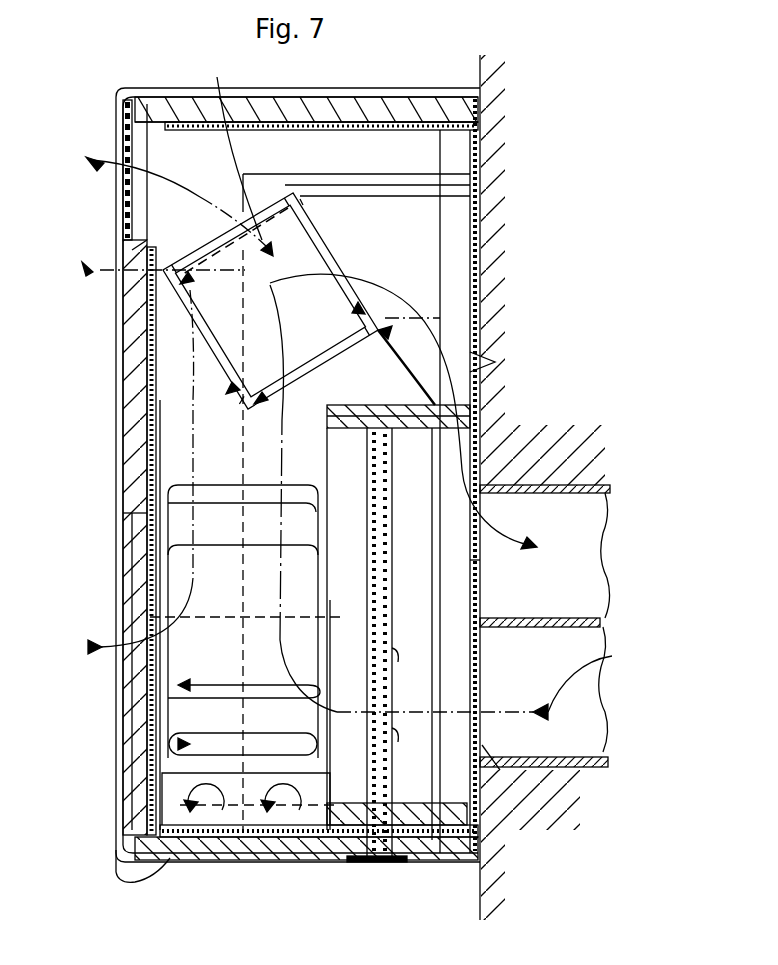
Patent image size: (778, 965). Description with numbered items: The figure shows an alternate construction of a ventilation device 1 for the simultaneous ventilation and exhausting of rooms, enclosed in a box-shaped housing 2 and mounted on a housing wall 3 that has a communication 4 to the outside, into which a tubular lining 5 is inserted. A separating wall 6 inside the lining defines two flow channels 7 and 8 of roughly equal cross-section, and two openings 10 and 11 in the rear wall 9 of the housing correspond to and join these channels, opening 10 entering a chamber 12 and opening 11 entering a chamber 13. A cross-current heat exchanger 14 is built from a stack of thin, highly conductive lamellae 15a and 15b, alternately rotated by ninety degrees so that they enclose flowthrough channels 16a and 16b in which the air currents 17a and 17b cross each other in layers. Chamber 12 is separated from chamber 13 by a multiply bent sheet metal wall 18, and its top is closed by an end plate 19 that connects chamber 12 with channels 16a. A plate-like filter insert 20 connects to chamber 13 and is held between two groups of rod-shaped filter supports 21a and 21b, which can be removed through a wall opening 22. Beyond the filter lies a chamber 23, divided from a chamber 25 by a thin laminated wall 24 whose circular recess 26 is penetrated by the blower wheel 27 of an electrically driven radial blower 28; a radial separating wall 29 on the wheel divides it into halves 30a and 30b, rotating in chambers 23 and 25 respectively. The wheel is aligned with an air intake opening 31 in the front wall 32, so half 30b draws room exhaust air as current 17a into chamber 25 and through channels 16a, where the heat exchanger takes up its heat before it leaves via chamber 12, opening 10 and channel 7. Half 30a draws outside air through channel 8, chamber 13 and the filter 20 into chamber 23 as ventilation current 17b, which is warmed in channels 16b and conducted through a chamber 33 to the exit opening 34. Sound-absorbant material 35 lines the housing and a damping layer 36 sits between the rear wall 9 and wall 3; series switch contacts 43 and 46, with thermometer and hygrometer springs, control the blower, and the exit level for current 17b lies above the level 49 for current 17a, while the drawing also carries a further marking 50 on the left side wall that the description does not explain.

The ventilation device 1 is at (104, 92).
The housing 2 is at (128, 882).
The housing wall 3 is at (542, 487).
The communication 4 is at (536, 482).
The tubular lining 5 is at (600, 757).
The separating wall 6 is at (583, 620).
The flow channel 7 is at (588, 540).
The flow channel 8 is at (578, 688).
The rear wall 9 is at (493, 795).
The opening 10 is at (478, 418).
The opening 11 is at (480, 735).
The chamber 12 is at (472, 362).
The chamber 13 is at (427, 783).
The heat exchanger 14 is at (230, 143).
The lamellae 15a is at (333, 258).
The lamellae 15b is at (176, 260).
The flowthrough channels 16a is at (262, 290).
The flowthrough channels 16b is at (357, 322).
The exhaust media current 17a is at (85, 647).
The ventilation media current 17b is at (90, 163).
The sheet metal wall 18 is at (470, 578).
The end plate 19 is at (362, 192).
The filter insert 20 is at (384, 862).
The filter supports 21a is at (384, 629).
The filter supports 21b is at (397, 776).
The wall opening 22 is at (356, 863).
The chamber 23 is at (245, 440).
The wall 24 is at (160, 400).
The chamber 25 is at (258, 470).
The circular recess 26 is at (243, 758).
The blower wheel 27 is at (180, 744).
The radial blower 28 is at (320, 638).
The radial separating wall 29 is at (240, 533).
The blower wheel half 30a is at (265, 520).
The blower wheel half 30b is at (183, 587).
The air intake opening 31 is at (135, 597).
The front wall 32 is at (125, 334).
The chamber 33 is at (187, 150).
The exit opening 34 is at (125, 145).
The sound-absorbant material 35 is at (340, 118).
The damping layer 36 is at (484, 207).
The switch contact 43 is at (282, 812).
The switch contact 46 is at (207, 812).
The level 49 is at (433, 310).
The insulation strip 50 is at (152, 533).